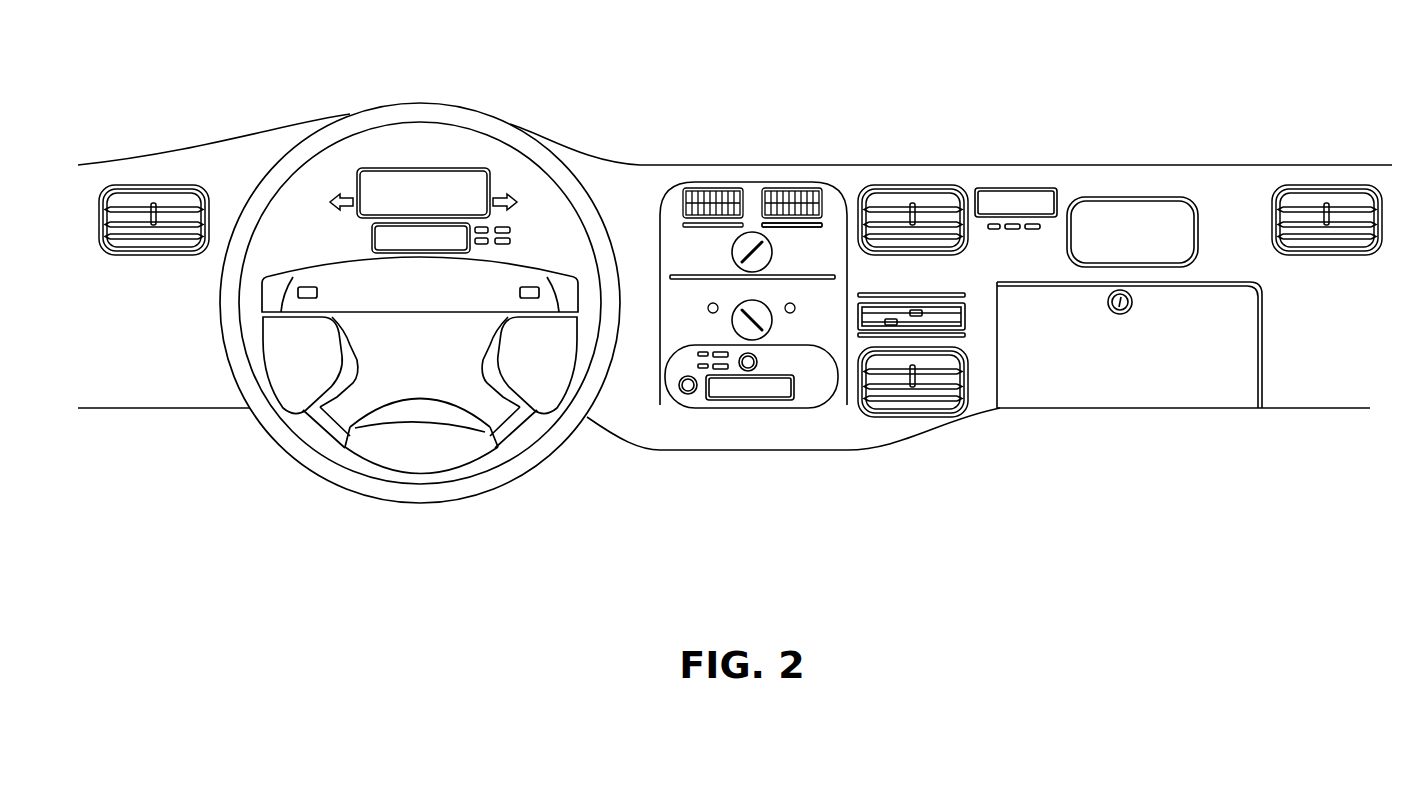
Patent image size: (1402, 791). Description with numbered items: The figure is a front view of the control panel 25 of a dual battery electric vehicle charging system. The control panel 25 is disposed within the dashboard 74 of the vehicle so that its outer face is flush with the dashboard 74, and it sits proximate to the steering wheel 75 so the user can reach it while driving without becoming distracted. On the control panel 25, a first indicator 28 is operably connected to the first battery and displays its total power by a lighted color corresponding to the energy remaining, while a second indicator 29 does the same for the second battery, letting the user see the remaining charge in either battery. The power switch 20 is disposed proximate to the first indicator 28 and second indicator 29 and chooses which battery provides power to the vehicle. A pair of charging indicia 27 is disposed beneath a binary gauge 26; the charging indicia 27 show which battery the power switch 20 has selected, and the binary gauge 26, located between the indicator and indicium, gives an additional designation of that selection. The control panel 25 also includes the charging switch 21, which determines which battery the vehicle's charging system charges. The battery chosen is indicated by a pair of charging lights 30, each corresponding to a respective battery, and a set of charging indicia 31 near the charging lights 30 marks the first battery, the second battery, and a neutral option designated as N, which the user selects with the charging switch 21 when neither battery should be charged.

The dashboard 74 is at (1222, 195).
The steering wheel 75 is at (418, 137).
The control panel 25 is at (670, 210).
The first indicator 28 is at (718, 195).
The second indicator 29 is at (797, 195).
The binary gauge 26 is at (820, 225).
The power switch 20 is at (752, 238).
The charging switch 21 is at (773, 318).
The charging indicia 27 is at (700, 243).
The charging indicia 31 is at (815, 290).
The charging lights 30 is at (708, 310).